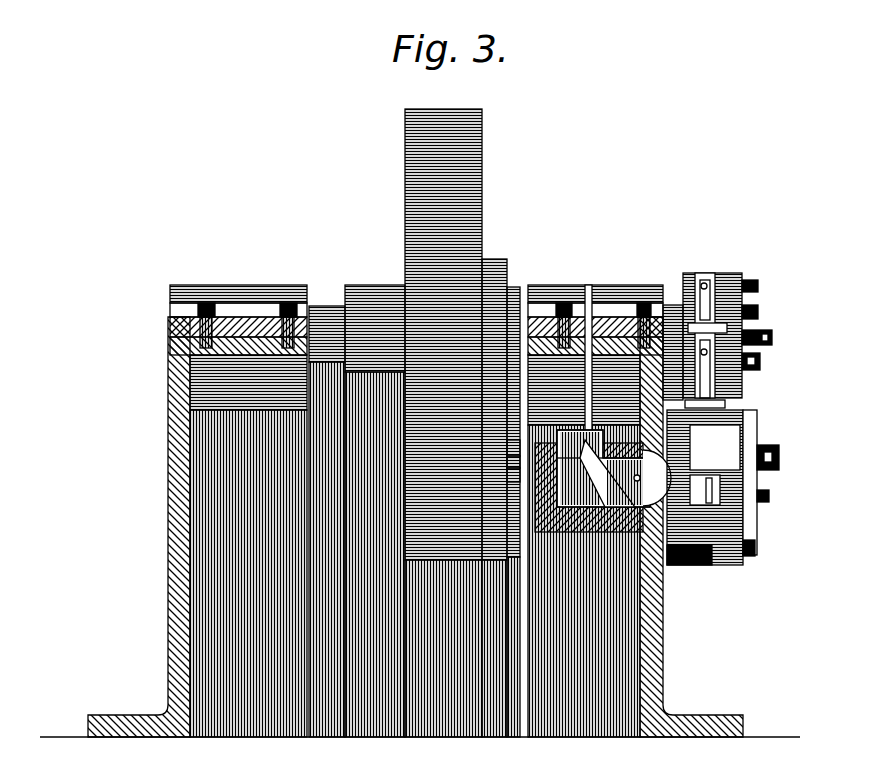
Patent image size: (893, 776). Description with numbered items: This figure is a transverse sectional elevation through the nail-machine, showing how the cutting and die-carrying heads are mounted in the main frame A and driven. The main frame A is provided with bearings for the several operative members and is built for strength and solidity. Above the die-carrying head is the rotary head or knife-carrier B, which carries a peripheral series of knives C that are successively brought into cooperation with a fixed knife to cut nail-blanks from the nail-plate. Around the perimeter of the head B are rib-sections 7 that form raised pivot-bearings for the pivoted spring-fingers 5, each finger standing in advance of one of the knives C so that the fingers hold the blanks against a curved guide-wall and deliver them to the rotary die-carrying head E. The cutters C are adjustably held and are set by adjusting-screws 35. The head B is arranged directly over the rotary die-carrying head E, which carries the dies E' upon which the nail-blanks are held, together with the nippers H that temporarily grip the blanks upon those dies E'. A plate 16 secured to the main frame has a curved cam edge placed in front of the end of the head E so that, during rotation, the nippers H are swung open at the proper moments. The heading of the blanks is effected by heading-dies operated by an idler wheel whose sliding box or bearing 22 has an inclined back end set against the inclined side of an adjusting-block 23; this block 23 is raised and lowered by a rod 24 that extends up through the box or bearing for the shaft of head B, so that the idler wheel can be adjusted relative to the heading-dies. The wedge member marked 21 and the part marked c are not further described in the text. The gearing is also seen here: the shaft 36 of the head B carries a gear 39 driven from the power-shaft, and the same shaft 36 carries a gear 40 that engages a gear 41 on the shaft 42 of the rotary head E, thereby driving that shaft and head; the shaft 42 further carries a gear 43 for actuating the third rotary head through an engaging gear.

The main frame A is at (180, 495).
The shaft 36 is at (320, 302).
The gear 39 is at (484, 157).
The gear 40 is at (506, 261).
The rod 24 is at (592, 290).
The adjusting-block 23 is at (592, 481).
The wedge 21 is at (607, 473).
The sliding box or bearing 22 is at (622, 482).
The gear 41 is at (504, 449).
The shaft 42 is at (503, 476).
The gear 43 is at (505, 463).
The rotary head or knife-carrier B is at (718, 315).
The cross bar c is at (722, 330).
The knives or cutters C is at (716, 270).
The rib-sections 7 is at (703, 278).
The spring-fingers 5 is at (705, 325).
The adjusting-screws 35 is at (752, 288).
The rotary die-carrying head E is at (734, 487).
The dies E' is at (748, 481).
The nippers H is at (745, 488).
The plate 16 is at (757, 548).